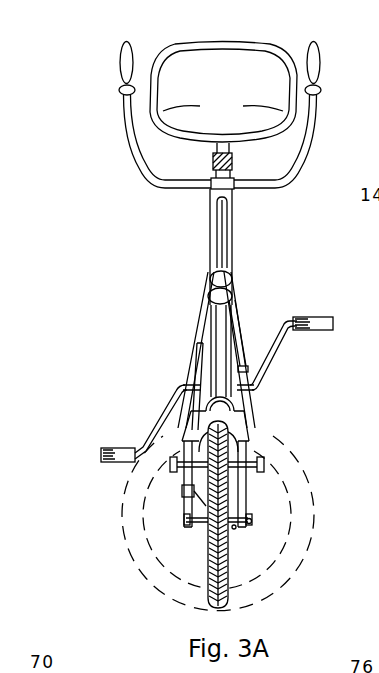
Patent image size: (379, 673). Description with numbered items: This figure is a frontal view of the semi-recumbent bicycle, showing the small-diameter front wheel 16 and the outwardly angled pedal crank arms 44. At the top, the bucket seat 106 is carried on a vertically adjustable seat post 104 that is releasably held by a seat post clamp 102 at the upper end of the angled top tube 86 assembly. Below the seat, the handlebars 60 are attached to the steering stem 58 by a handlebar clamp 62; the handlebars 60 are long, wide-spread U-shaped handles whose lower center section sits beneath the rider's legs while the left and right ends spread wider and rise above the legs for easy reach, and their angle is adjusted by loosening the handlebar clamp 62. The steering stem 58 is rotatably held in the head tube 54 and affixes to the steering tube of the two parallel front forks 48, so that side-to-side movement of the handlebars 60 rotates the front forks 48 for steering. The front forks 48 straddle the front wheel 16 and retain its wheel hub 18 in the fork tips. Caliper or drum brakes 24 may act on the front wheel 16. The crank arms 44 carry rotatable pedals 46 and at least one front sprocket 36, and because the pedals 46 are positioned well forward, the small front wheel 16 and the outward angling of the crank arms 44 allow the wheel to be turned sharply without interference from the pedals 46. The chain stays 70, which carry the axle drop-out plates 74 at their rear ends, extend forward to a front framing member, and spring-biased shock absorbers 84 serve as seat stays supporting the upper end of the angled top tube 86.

The front wheel 16 is at (292, 555).
The wheel hub 18 is at (250, 520).
The caliper or drum brakes 24 is at (182, 491).
The front sprocket 36 is at (200, 352).
The crank arms 44 is at (157, 430).
The pedals 46 is at (101, 457).
The front forks 48 is at (258, 433).
The head tube 54 is at (238, 303).
The steering stem 58 is at (217, 207).
The handlebars 60 is at (313, 127).
The handlebar clamp 62 is at (234, 188).
The chain stays 70 is at (186, 423).
The axle drop-out plates 74 is at (170, 465).
The shock absorbers 84 is at (200, 303).
The angled top tube 86 is at (233, 234).
The seat post clamp 102 is at (216, 166).
The seat post 104 is at (232, 148).
The bucket seat 106 is at (238, 42).